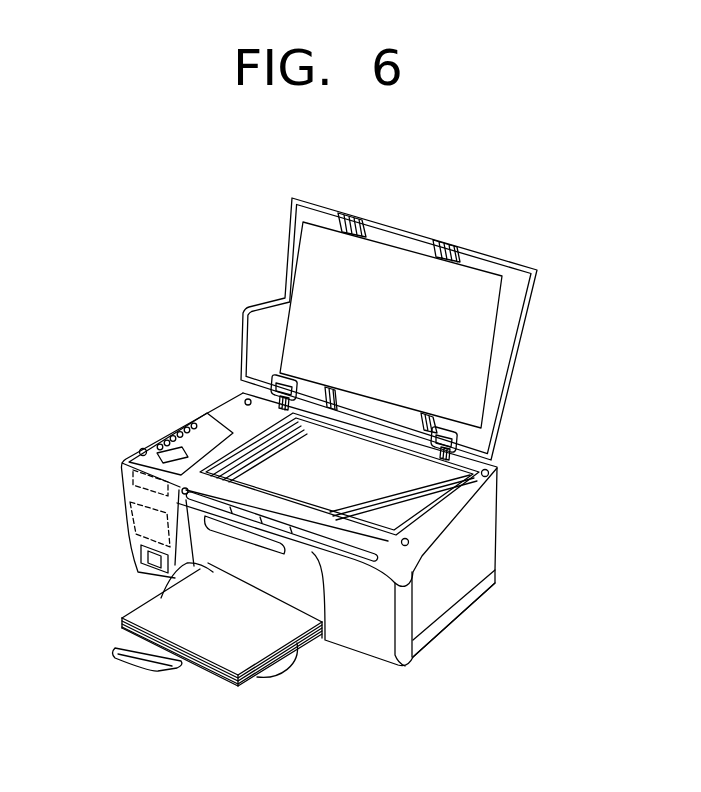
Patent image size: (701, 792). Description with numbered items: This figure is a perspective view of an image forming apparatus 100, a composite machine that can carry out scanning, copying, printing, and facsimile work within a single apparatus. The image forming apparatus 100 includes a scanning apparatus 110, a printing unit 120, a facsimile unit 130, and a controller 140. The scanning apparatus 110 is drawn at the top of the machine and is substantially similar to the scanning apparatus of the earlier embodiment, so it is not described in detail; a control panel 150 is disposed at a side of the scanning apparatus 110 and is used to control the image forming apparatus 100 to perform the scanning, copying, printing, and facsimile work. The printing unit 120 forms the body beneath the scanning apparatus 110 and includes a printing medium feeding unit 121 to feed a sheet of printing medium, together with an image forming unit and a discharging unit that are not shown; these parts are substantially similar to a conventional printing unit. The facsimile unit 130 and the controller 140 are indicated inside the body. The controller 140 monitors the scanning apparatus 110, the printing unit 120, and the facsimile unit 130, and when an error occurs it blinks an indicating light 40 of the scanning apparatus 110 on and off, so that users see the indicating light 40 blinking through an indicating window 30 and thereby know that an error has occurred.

The image forming apparatus 100 is at (134, 306).
The scanning apparatus 110 is at (498, 468).
The printing unit 120 is at (493, 540).
The printing medium feeding unit 121 is at (300, 653).
The facsimile unit 130 is at (134, 518).
The controller 140 is at (132, 472).
The control panel 150 is at (200, 432).
The indicating light 40 is at (166, 511).
The indicating window 30 is at (340, 546).